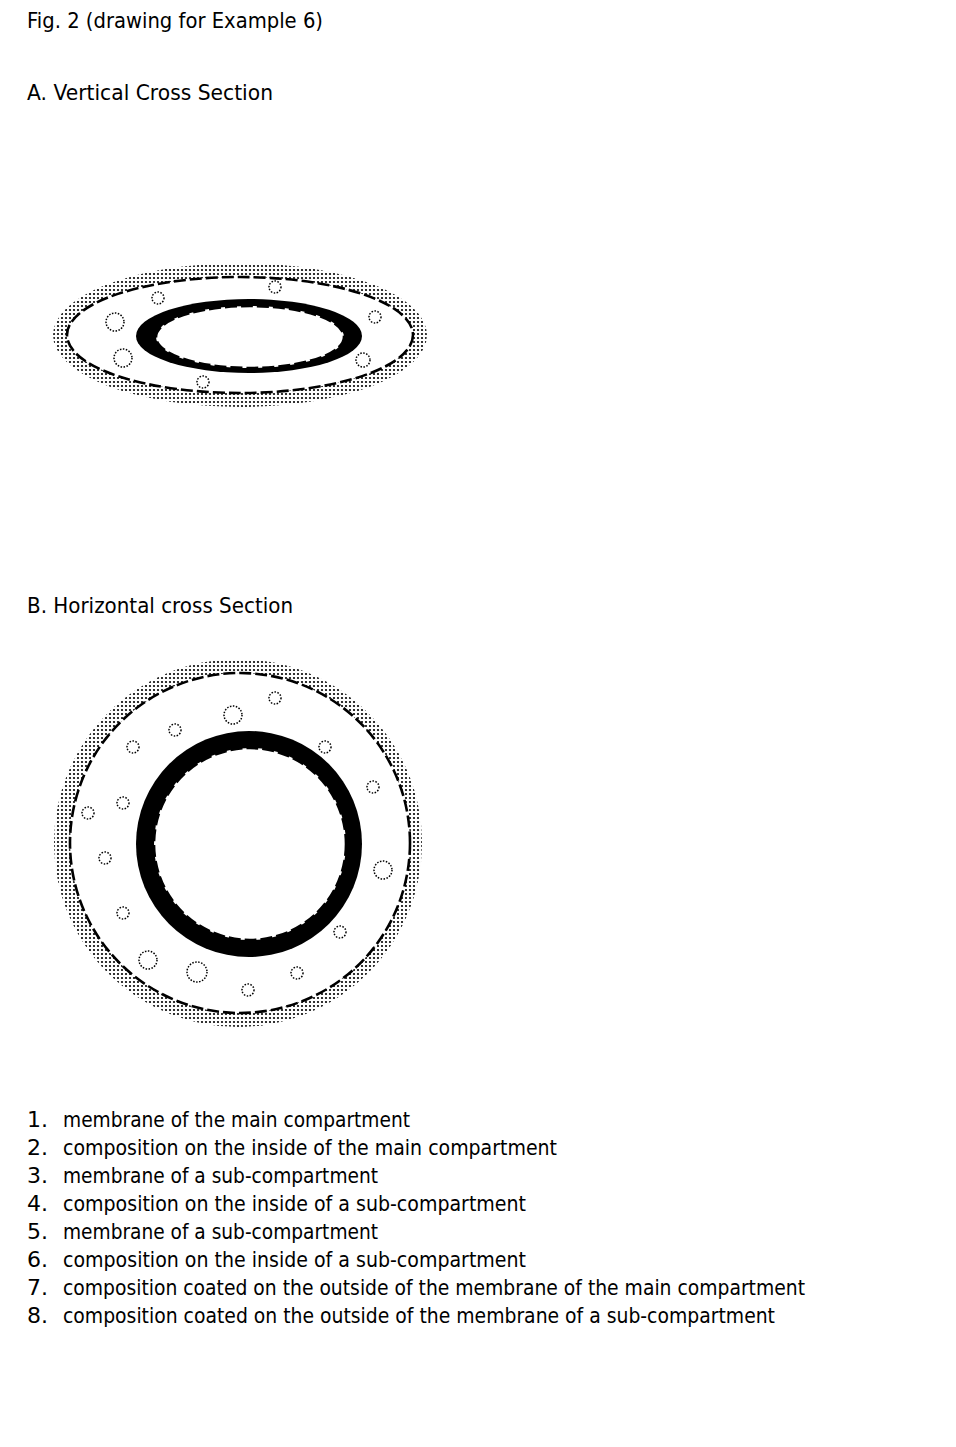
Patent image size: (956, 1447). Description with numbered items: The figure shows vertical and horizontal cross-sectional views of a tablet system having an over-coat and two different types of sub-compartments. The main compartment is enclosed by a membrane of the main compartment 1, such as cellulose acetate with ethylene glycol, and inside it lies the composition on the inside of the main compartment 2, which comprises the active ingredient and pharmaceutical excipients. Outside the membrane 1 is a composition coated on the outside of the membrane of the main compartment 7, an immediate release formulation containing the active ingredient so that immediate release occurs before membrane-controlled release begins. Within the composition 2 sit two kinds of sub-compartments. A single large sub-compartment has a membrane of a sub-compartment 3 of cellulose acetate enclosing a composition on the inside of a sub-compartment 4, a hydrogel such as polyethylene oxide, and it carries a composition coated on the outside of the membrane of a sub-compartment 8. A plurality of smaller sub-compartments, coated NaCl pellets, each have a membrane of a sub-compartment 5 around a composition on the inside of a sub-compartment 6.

The membrane of the main compartment 1 is at (308, 277).
The composition on the inside of the main compartment 2 is at (323, 293).
The membrane of a sub-compartment 3 is at (312, 313).
The composition on the inside of a sub-compartment 4 is at (310, 338).
The membrane of a sub-compartment 5 is at (360, 353).
The composition on the inside of a sub-compartment 6 is at (362, 362).
The composition coated on the outside of the membrane of the main compartment 7 is at (363, 383).
The composition coated on the outside of the membrane of a sub-compartment 8 is at (305, 363).